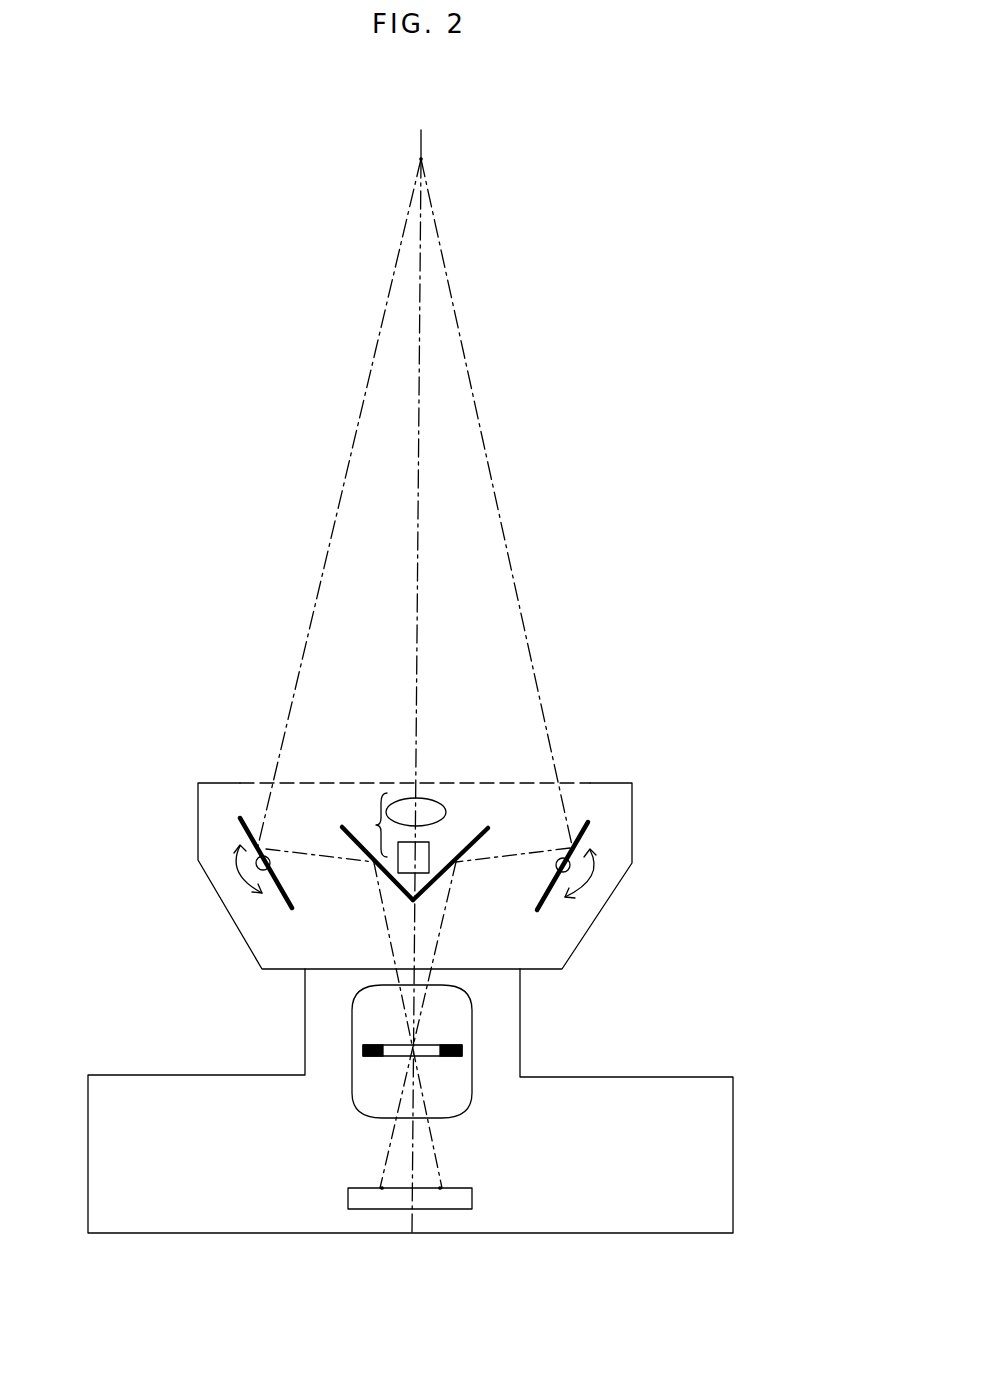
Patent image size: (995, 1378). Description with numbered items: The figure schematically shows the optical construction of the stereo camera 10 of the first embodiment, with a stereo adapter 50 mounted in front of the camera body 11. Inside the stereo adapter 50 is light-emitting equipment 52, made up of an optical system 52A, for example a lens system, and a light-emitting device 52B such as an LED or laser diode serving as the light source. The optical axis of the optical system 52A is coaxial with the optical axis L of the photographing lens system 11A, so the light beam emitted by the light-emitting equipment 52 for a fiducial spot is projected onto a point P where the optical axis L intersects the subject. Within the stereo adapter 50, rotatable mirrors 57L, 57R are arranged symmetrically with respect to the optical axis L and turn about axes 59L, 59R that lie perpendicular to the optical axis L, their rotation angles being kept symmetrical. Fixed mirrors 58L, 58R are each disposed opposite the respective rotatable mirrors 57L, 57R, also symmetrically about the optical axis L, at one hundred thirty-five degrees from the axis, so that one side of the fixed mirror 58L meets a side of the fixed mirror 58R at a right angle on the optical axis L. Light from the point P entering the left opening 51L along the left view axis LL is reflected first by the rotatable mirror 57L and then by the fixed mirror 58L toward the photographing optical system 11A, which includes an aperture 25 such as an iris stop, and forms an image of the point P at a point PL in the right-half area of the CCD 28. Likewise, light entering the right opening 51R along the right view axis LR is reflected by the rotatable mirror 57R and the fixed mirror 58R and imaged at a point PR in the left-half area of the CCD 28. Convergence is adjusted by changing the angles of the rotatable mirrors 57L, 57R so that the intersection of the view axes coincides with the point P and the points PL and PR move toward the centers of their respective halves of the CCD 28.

The stereo camera 10 is at (410, 1146).
The housing 11 is at (305, 1032).
The photographing lens system 11A is at (472, 1097).
The aperture 25 is at (467, 1055).
The CCD 28 is at (440, 1210).
The stereo adapter 50 is at (638, 825).
The left opening 51L is at (258, 778).
The right opening 51R is at (575, 780).
The light-emitting equipment 52 is at (434, 803).
The optical system 52A is at (428, 798).
The light-emitting device 52B is at (430, 848).
The rotatable mirror 57L is at (283, 897).
The rotatable mirror 57R is at (545, 897).
The fixed mirror 58L is at (343, 830).
The fixed mirror 58R is at (428, 893).
The axis 59L is at (272, 866).
The axis 59R is at (556, 866).
The point P is at (426, 157).
The optical axis L is at (422, 411).
The left light beam LL is at (347, 473).
The right light beam LR is at (498, 503).
The point P_L PL is at (440, 1186).
The point P_R PR is at (382, 1186).